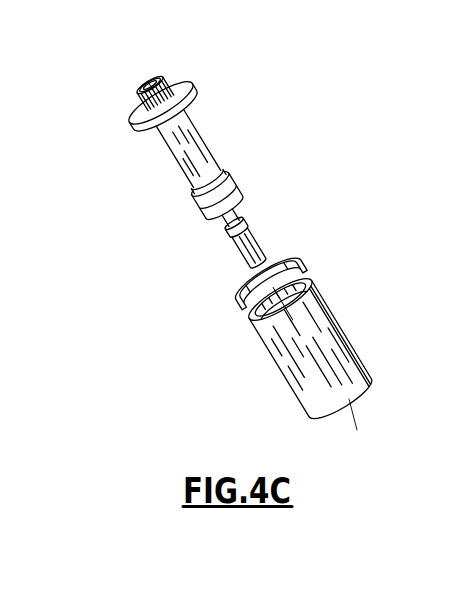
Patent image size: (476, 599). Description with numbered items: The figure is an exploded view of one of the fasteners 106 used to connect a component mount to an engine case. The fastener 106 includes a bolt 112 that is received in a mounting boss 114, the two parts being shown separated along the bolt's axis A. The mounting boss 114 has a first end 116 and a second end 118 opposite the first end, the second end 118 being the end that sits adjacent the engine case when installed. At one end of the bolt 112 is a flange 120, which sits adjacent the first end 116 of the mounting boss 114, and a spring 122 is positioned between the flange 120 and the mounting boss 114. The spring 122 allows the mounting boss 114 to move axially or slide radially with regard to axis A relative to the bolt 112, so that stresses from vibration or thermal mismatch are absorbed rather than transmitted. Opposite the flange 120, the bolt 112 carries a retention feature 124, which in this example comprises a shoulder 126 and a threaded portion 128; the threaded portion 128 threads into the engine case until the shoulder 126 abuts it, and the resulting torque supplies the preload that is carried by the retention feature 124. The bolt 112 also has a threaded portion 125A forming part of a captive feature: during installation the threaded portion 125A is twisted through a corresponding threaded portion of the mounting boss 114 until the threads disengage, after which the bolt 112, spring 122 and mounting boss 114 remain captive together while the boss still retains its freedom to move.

The axis A is at (137, 71).
The fastener 106 is at (261, 126).
The bolt 112 is at (120, 192).
The mounting boss 114 is at (270, 364).
The first end 116 is at (333, 270).
The second end 118 is at (380, 352).
The flange 120 is at (126, 121).
The spring 122 is at (233, 297).
The retention feature 124 is at (265, 224).
The threaded portion 125A is at (237, 185).
The shoulder 126 is at (213, 223).
The threaded portion 128 is at (233, 250).